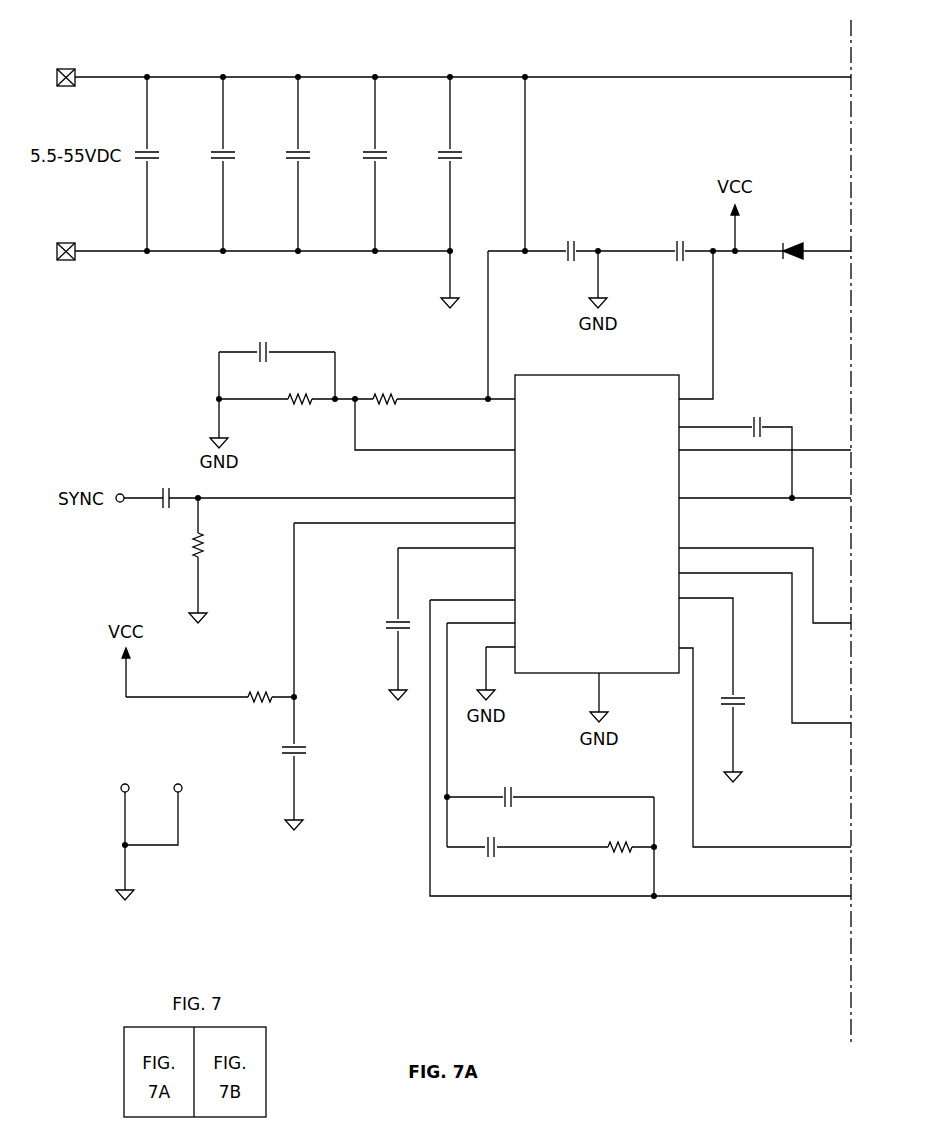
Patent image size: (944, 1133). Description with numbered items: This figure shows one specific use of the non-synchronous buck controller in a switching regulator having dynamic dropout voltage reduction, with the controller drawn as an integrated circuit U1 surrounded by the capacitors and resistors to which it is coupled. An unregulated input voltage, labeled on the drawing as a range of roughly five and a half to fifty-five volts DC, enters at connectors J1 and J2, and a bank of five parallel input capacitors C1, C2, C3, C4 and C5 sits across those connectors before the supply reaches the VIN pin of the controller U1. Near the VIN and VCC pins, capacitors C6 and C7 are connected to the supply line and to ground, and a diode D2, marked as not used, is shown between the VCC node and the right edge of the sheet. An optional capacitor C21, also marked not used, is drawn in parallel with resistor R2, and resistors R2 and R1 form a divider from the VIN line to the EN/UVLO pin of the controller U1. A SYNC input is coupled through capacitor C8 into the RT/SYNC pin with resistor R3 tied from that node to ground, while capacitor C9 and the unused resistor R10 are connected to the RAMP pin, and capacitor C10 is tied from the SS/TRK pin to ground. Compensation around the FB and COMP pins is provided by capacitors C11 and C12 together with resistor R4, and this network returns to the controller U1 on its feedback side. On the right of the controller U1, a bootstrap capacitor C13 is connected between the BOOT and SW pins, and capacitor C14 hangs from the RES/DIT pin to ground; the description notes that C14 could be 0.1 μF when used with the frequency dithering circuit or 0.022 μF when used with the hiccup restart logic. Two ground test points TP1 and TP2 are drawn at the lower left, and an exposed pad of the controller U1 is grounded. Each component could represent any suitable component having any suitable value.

The input connector J1 is at (65, 66).
The input connector J2 is at (65, 240).
The input capacitor C1 2.2 uF C1 is at (170, 164).
The input capacitor C2 2.2 uF C2 is at (246, 164).
The input capacitor C3 2.2 uF C3 is at (321, 164).
The input capacitor C4 2.2 uF C4 is at (398, 164).
The input capacitor C5 2.2 uF C5 is at (469, 204).
The capacitor C6 0.1 uF C6 is at (549, 251).
The capacitor C7 1.0 uF C7 is at (658, 251).
The diode D2 (not used) D2 is at (807, 251).
The capacitor C21 (not used) C21 is at (239, 352).
The resistor R2 16.2k R2 is at (300, 398).
The resistor R1 54.9k R1 is at (385, 399).
The controller IC U1 is at (602, 512).
The capacitor C8 100 pF C8 is at (146, 520).
The resistor R3 24.9k R3 is at (217, 574).
The capacitor C9 270 pF C9 is at (317, 796).
The resistor R10 (not used) R10 is at (259, 697).
The capacitor C10 0.022 uF C10 is at (365, 669).
The capacitor C11 100 pF C11 is at (540, 796).
The capacitor C12 0.015 uF C12 is at (507, 854).
The resistor R4 18.2k R4 is at (622, 846).
The capacitor C13 is at (786, 407).
The capacitor C14 is at (745, 753).
The test point TP1 GND TP1 is at (125, 829).
The test point TP2 GND TP2 is at (161, 789).